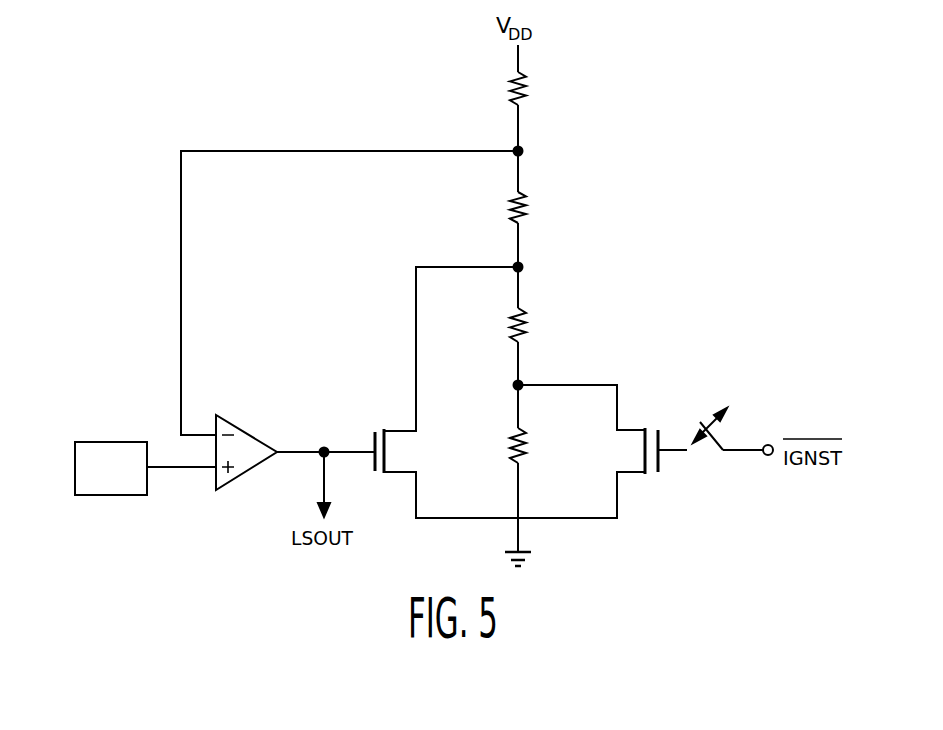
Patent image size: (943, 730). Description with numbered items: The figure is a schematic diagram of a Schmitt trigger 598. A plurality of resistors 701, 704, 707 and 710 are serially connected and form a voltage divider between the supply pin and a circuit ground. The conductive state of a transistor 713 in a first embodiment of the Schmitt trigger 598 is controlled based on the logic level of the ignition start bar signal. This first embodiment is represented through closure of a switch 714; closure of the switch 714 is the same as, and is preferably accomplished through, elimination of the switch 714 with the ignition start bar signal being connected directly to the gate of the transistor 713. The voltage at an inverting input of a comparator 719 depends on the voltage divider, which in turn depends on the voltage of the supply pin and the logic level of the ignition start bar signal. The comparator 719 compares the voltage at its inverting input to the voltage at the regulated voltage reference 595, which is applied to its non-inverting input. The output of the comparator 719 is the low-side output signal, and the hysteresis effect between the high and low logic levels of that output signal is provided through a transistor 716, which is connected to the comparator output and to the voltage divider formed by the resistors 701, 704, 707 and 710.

The resistor 701 is at (508, 90).
The resistor 704 is at (510, 212).
The resistor 707 is at (512, 328).
The resistor 710 is at (512, 450).
The transistor 713 is at (655, 428).
The switch 714 is at (730, 432).
The transistor 716 is at (382, 428).
The comparator 719 is at (245, 428).
The VREG 595 is at (95, 440).
The Schmitt trigger 598 is at (668, 205).